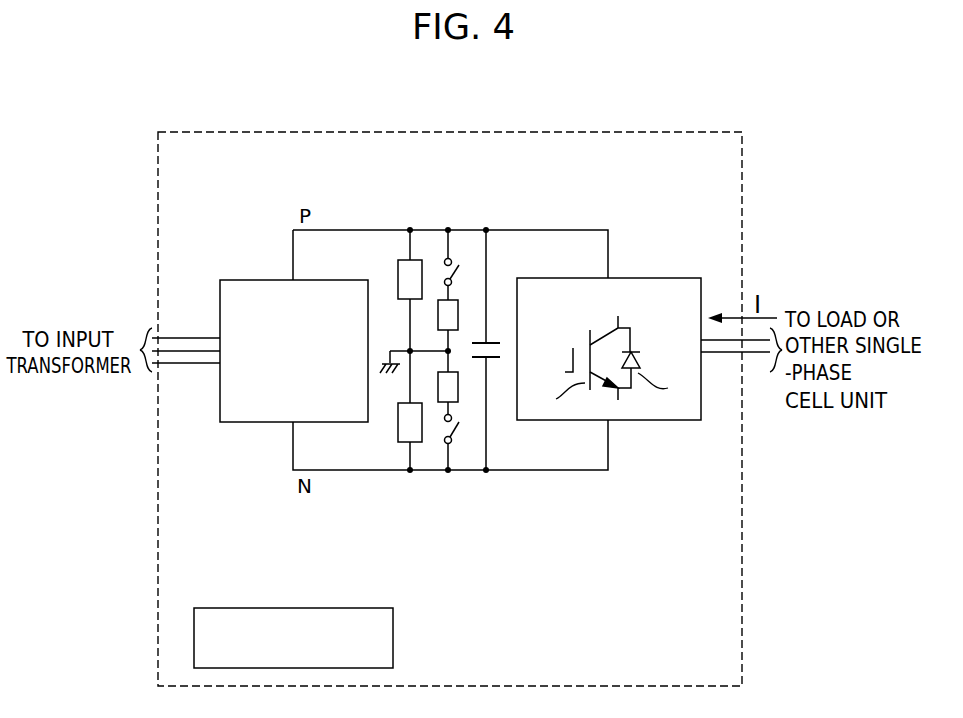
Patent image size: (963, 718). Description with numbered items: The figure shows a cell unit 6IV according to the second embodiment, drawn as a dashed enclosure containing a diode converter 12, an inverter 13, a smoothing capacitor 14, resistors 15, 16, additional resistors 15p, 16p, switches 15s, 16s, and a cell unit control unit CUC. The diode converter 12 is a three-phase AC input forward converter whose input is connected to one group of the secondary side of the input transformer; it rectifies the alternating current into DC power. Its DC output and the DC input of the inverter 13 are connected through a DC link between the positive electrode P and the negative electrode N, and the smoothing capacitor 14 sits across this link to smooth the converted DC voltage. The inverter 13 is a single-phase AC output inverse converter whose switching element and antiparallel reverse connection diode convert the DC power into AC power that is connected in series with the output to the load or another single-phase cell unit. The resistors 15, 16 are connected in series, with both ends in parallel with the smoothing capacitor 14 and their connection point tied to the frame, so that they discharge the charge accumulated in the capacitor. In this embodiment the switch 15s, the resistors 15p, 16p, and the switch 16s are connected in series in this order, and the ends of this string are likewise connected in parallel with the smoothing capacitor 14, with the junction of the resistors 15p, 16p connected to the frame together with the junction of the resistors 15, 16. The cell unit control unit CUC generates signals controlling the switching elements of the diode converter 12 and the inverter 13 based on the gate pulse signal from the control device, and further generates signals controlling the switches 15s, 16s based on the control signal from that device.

The cell unit 6IV is at (641, 130).
The diode converter 12 is at (248, 280).
The inverter 13 is at (655, 278).
The smoothing capacitor 14 is at (497, 342).
The resistor 15 is at (398, 272).
The resistor 16 is at (398, 432).
The switch 15s is at (445, 259).
The resistor 15p is at (459, 310).
The switch 16s is at (445, 443).
The resistor 16p is at (459, 387).
The cell unit control unit CUC is at (282, 606).